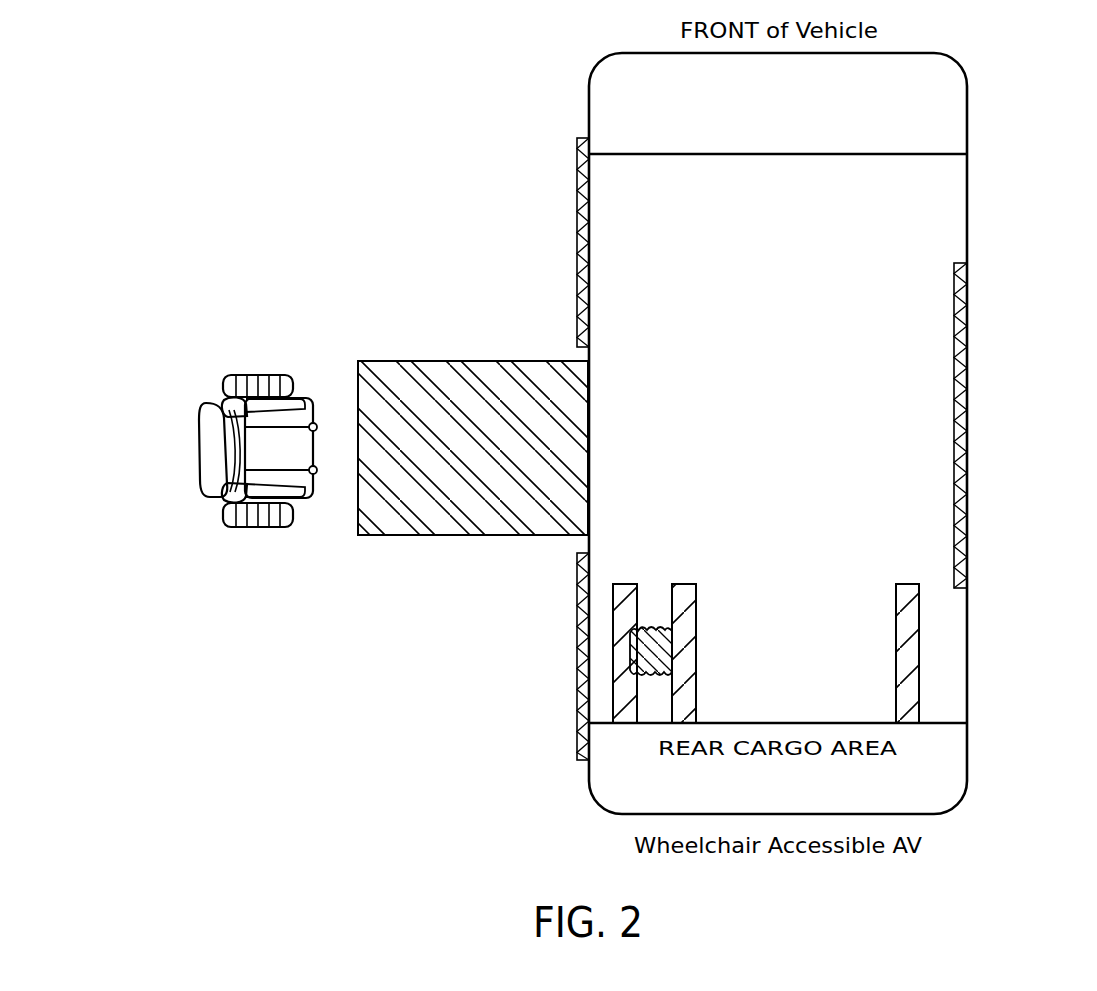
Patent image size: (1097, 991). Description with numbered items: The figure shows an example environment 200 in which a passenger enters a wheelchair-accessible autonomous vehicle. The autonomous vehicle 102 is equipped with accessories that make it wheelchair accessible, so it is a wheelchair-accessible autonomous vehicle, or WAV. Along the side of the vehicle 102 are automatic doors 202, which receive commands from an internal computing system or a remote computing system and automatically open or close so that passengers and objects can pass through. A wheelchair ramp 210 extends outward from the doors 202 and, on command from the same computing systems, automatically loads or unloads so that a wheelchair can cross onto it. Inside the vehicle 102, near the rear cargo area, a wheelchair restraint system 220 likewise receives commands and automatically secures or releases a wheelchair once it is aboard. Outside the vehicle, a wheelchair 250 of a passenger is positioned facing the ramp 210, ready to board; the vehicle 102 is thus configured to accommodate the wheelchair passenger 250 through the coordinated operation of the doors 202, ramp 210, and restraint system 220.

The example environment 200 is at (66, 76).
The wheelchair-accessible autonomous vehicle 102 is at (967, 80).
The automatic doors 202 is at (577, 269).
The wheelchair ramp 210 is at (460, 362).
The wheelchair restraint system 220 is at (684, 584).
The wheelchair 250 is at (206, 403).